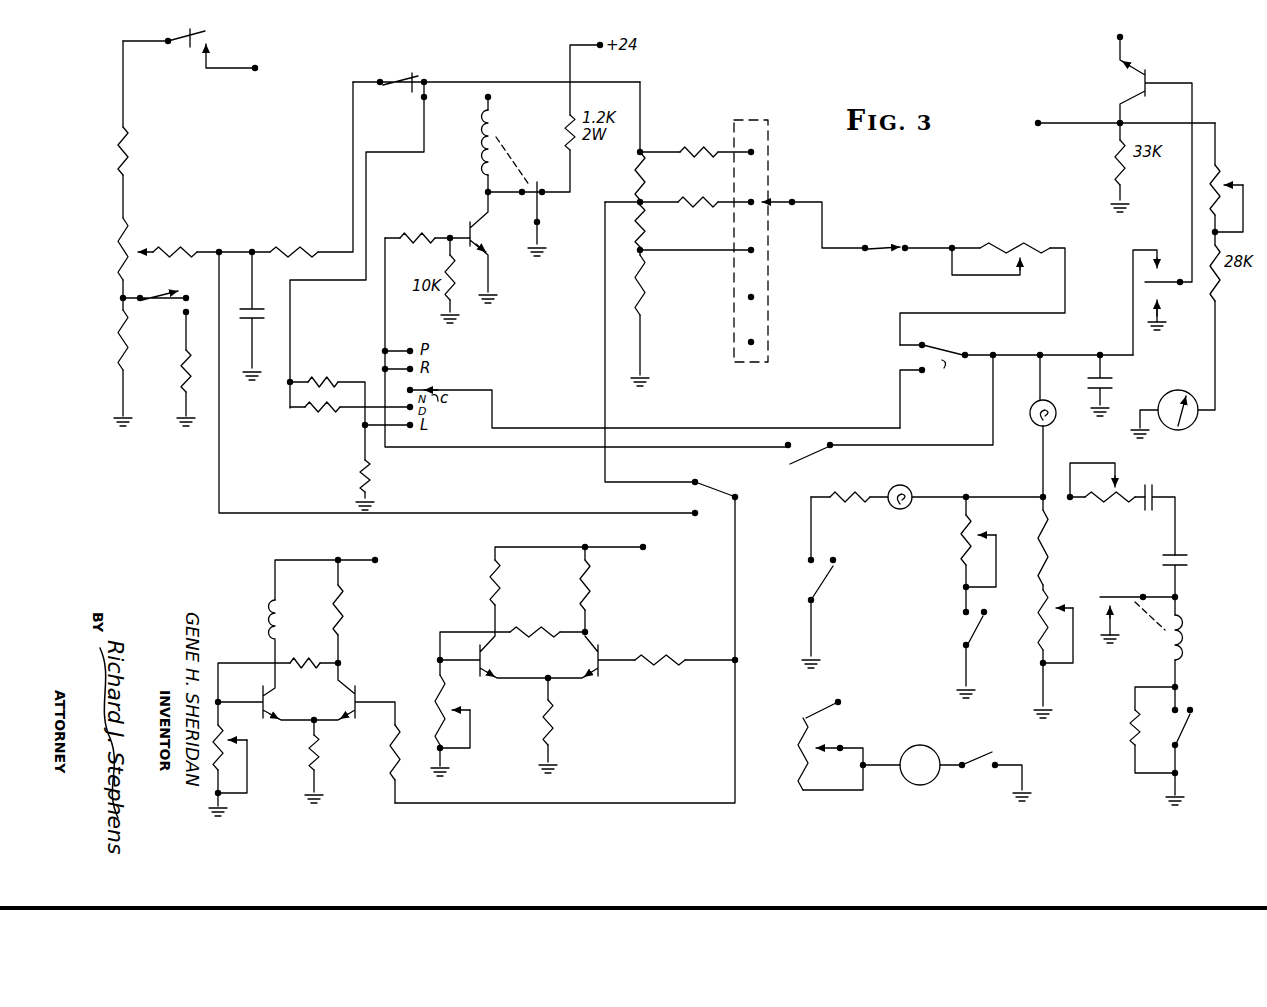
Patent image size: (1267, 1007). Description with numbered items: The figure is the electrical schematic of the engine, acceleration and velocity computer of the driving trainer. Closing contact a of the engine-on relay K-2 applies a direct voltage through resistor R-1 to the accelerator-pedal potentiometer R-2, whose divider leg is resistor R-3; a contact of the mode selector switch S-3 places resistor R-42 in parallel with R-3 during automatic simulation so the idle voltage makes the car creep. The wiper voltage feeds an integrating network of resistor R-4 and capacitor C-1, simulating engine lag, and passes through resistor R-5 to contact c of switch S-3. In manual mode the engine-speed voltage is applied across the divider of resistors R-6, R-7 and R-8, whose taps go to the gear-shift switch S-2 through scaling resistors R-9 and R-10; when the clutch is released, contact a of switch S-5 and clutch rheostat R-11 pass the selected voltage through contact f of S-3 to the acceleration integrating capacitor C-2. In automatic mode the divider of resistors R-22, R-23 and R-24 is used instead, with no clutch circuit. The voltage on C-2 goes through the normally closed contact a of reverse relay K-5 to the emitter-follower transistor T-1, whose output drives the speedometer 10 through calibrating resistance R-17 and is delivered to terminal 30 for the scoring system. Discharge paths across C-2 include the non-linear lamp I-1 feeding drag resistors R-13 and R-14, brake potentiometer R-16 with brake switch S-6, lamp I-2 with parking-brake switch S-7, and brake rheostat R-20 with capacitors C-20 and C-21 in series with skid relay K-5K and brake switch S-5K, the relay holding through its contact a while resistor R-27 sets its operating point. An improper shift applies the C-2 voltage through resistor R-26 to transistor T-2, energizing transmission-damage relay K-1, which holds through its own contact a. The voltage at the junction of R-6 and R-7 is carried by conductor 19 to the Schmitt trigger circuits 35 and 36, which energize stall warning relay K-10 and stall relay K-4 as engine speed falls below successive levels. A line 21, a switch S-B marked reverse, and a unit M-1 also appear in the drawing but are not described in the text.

The speedometer 10 is at (1187, 392).
The conductor 19 is at (604, 458).
The conductor 21 is at (612, 516).
The terminal 30 is at (1038, 121).
The Schmitt trigger circuit 35 is at (584, 654).
The Schmitt trigger circuit 36 is at (309, 686).
The transistor T-1 is at (1156, 152).
The transistor T-2 is at (458, 247).
The transmission damage relay K-1 is at (514, 171).
The engine on relay K-2 is at (215, 36).
The stall relay K-4 is at (230, 612).
The reverse relay K-5 is at (1160, 288).
The stall warning relay K-10 is at (486, 576).
The skid relay K-5K is at (1137, 642).
The gear shift lever-operated switch S-2 is at (757, 190).
The transmission mode selector switch S-3 is at (678, 505).
The clutch pedal-operated switch S-5 is at (908, 250).
The brake-pedal operated switch S-6 is at (961, 653).
The parking brake switch S-7 is at (819, 582).
The reverse switch S-B is at (876, 421).
The brake-pedal operated switch S-5K is at (1186, 730).
The incandescent bulb I-1 is at (1049, 426).
The non-linear resistance I-2 is at (928, 507).
The motor M-1 is at (912, 765).
The capacitor C-1 is at (261, 316).
The integrating capacitor C-2 is at (1110, 385).
The capacitor C-20 is at (1156, 480).
The capacitor C-21 is at (1190, 548).
The resistor R-1 is at (116, 150).
The potentiometer R-2 is at (110, 254).
The resistor R-3 is at (114, 338).
The resistor R-4 is at (195, 243).
The resistor R-5 is at (300, 243).
The resistor R-6 is at (634, 168).
The resistor R-7 is at (660, 230).
The resistor R-8 is at (658, 320).
The scaling resistance R-9 is at (714, 143).
The scaling resistance R-10 is at (679, 188).
The rheostat R-11 is at (1034, 240).
The resistor R-13 is at (1046, 551).
The resistor R-14 is at (1046, 606).
The brake pedal-operated resistance R-16 is at (958, 544).
The adjustable calibrating resistance R-17 is at (1234, 184).
The brake pedal-operated rheostat R-20 is at (951, 626).
The resistor R-22 is at (298, 420).
The resistor R-23 is at (336, 372).
The resistor R-24 is at (383, 466).
The resistor R-26 is at (432, 222).
The resistor R-27 is at (1128, 737).
The resistor R-42 is at (165, 369).